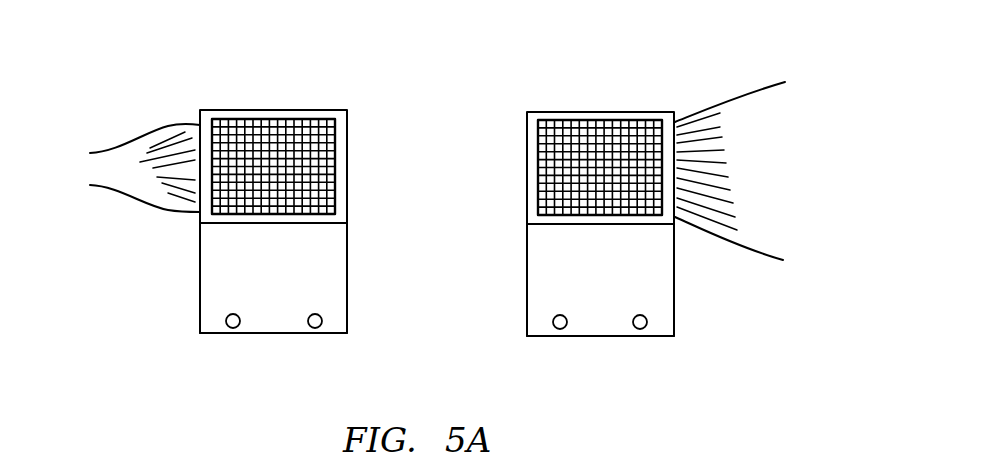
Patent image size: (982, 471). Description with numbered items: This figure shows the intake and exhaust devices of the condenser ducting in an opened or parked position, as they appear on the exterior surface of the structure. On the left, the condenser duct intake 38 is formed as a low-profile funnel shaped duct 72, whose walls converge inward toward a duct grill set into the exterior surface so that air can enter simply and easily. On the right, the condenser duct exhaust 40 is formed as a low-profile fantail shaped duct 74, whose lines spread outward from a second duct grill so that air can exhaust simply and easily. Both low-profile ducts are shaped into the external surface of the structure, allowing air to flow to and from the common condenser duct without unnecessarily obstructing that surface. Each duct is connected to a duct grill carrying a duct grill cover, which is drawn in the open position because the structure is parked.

The condenser duct intake 38 is at (115, 197).
The condenser duct exhaust 40 is at (685, 110).
The low-profile funnel shaped duct 72 is at (128, 160).
The low-profile fantail shaped duct 74 is at (768, 157).